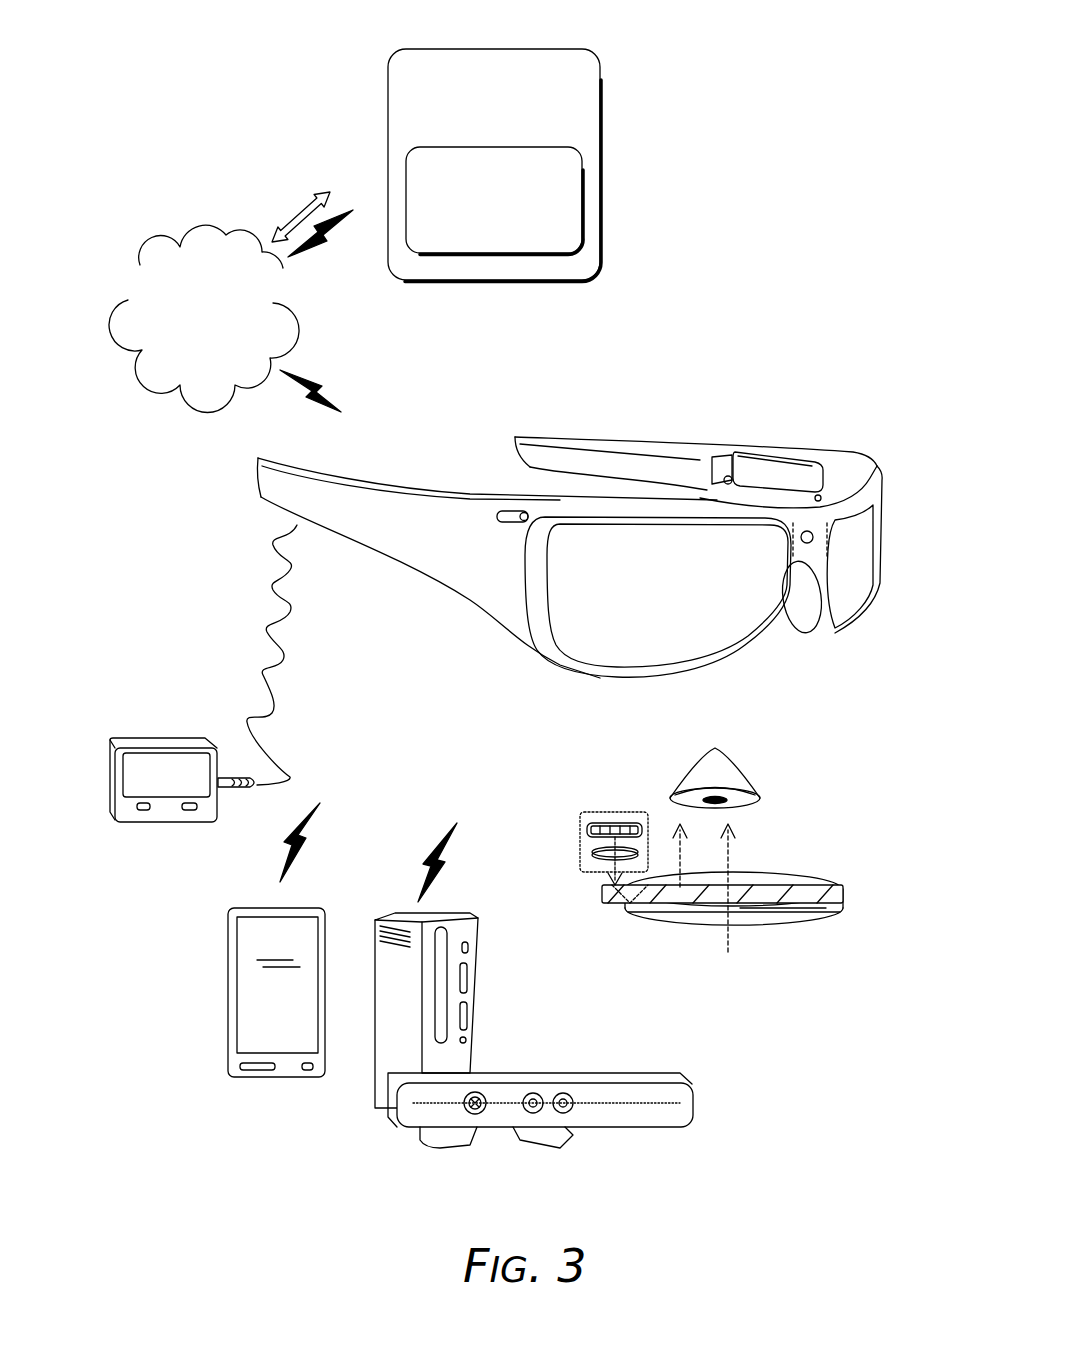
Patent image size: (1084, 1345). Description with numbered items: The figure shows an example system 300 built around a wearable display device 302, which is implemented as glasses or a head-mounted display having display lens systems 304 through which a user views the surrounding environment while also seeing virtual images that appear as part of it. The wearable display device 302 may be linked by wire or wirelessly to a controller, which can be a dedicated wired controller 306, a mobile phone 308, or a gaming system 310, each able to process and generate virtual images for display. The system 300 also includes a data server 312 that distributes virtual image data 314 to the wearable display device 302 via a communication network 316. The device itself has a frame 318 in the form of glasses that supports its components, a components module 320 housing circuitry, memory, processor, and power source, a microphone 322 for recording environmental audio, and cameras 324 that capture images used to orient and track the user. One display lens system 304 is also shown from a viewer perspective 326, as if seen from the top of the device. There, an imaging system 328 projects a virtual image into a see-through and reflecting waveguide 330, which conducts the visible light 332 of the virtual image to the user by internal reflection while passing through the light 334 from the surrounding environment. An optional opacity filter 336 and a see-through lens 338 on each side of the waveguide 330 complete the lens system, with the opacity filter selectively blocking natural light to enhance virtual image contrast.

The system 300 is at (807, 80).
The wearable display device 302 is at (743, 363).
The display lens system 304 is at (717, 630).
The controller 306 is at (182, 855).
The mobile phone 308 is at (297, 1109).
The gaming system 310 is at (552, 1181).
The data server 312 is at (437, 99).
The virtual image data 314 is at (476, 236).
The communication network 316 is at (137, 299).
The frame 318 is at (453, 573).
The components module 320 is at (817, 467).
The microphone 322 is at (810, 545).
The camera 324 is at (503, 510).
The viewer perspective 326 is at (622, 426).
The imaging system 328 is at (600, 810).
The see-through and reflecting waveguide 330 is at (805, 902).
The visible light 332 is at (670, 833).
The light from the surrounding environment 334 is at (745, 976).
The opacity filter 336 is at (748, 910).
The see-through lens 338 is at (793, 872).